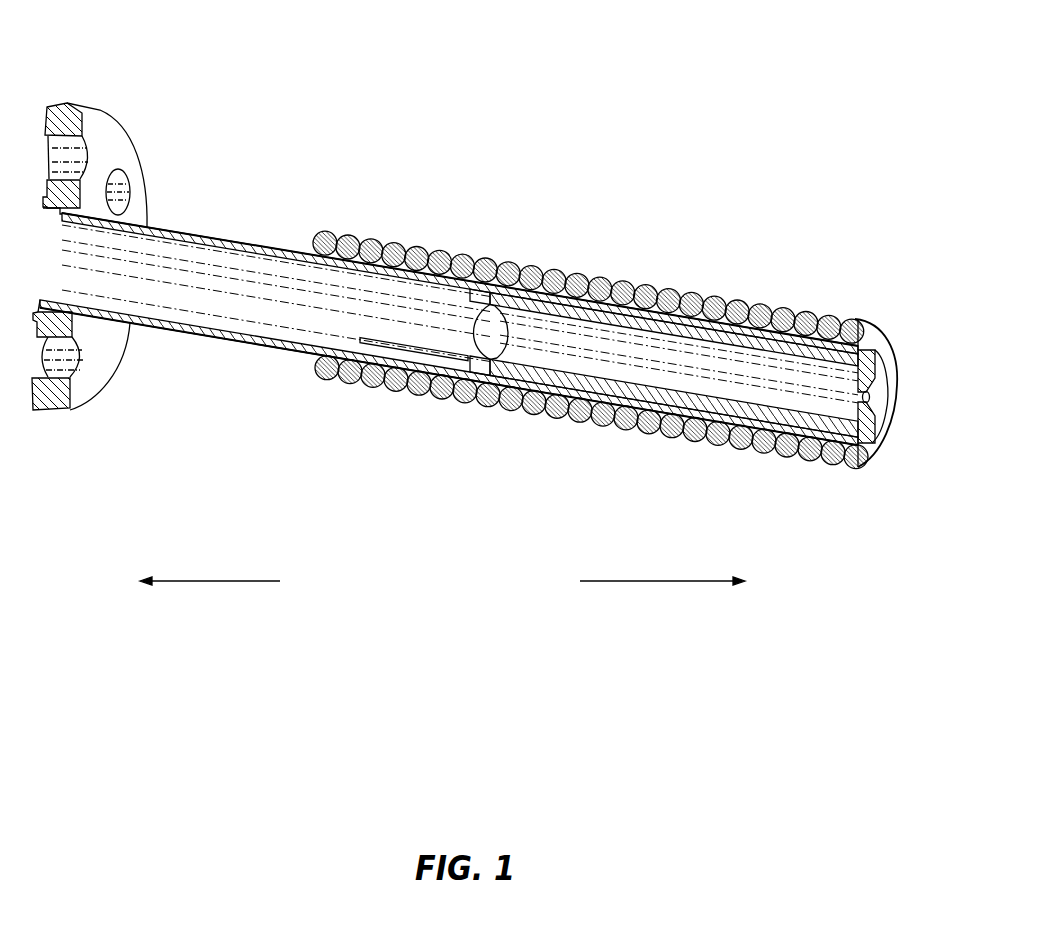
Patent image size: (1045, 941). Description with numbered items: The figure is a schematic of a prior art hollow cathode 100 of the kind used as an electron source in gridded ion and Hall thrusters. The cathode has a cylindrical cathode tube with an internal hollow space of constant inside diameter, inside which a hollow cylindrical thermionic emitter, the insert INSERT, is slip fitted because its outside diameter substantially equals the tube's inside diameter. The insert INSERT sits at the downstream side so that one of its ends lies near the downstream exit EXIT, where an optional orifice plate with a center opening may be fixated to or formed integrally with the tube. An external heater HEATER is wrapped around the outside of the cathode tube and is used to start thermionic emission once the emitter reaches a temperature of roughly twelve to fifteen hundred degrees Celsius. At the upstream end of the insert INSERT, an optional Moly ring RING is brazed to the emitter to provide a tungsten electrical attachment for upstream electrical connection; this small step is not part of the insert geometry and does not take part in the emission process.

The hollow cathode 100 is at (130, 33).
The ring RING is at (501, 263).
The insert INSERT is at (757, 300).
The downstream exit EXIT is at (886, 398).
The heater HEATER is at (417, 393).